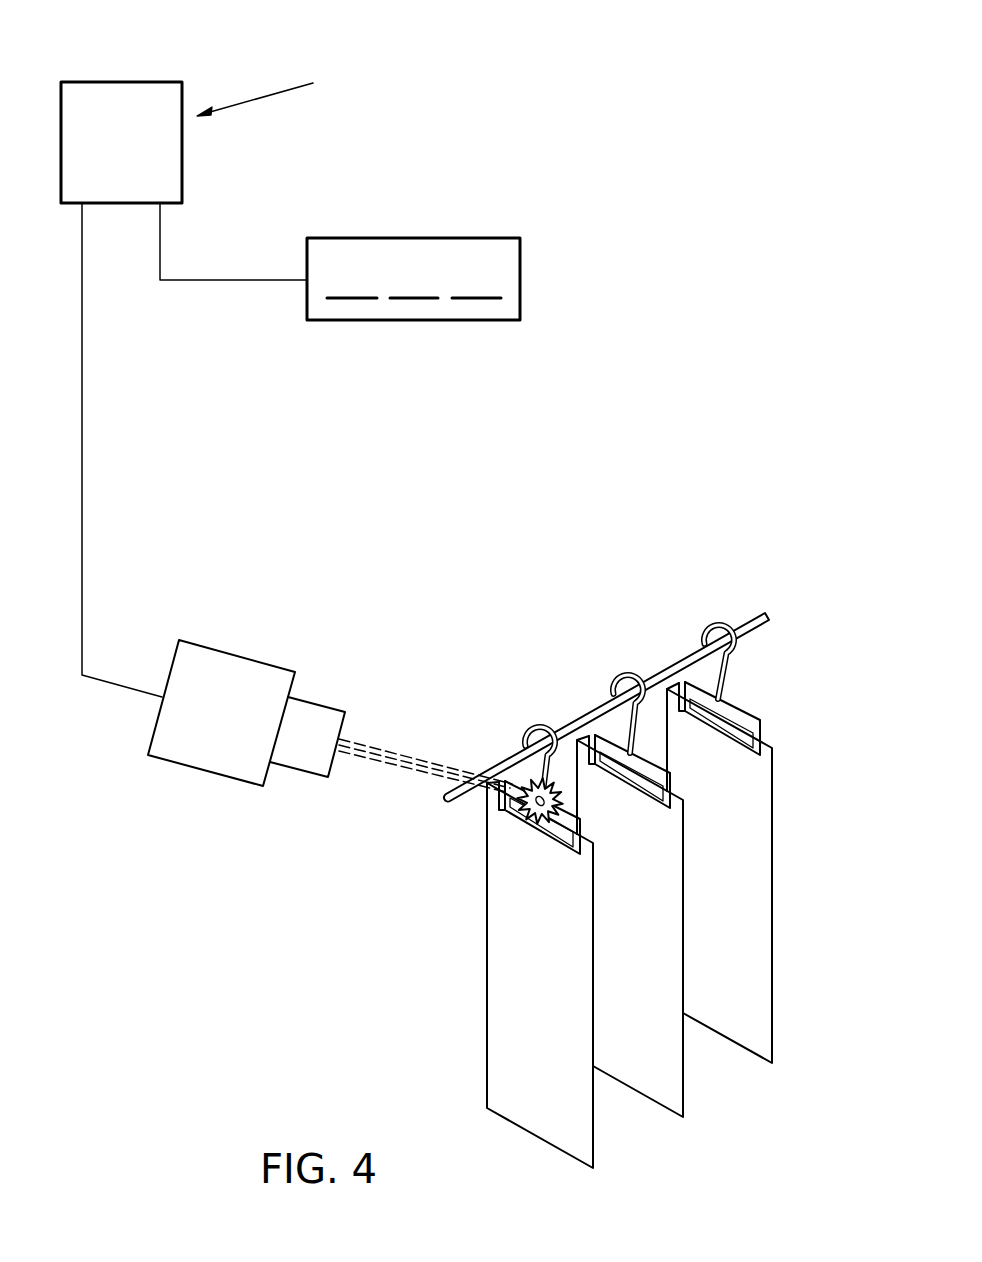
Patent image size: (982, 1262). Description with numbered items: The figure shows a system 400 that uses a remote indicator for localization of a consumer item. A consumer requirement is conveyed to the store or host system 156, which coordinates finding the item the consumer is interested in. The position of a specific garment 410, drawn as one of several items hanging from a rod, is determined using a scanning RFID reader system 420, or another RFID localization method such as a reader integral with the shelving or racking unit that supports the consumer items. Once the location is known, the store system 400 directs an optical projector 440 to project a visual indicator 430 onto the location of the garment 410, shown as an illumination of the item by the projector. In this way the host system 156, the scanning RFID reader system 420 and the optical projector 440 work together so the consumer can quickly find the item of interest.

The host system 156 is at (123, 82).
The system 400 is at (594, 136).
The garment 410 is at (772, 905).
The scanning RFID reader system 420 is at (520, 267).
The visual indicator 430 is at (526, 813).
The optical projector 440 is at (210, 777).